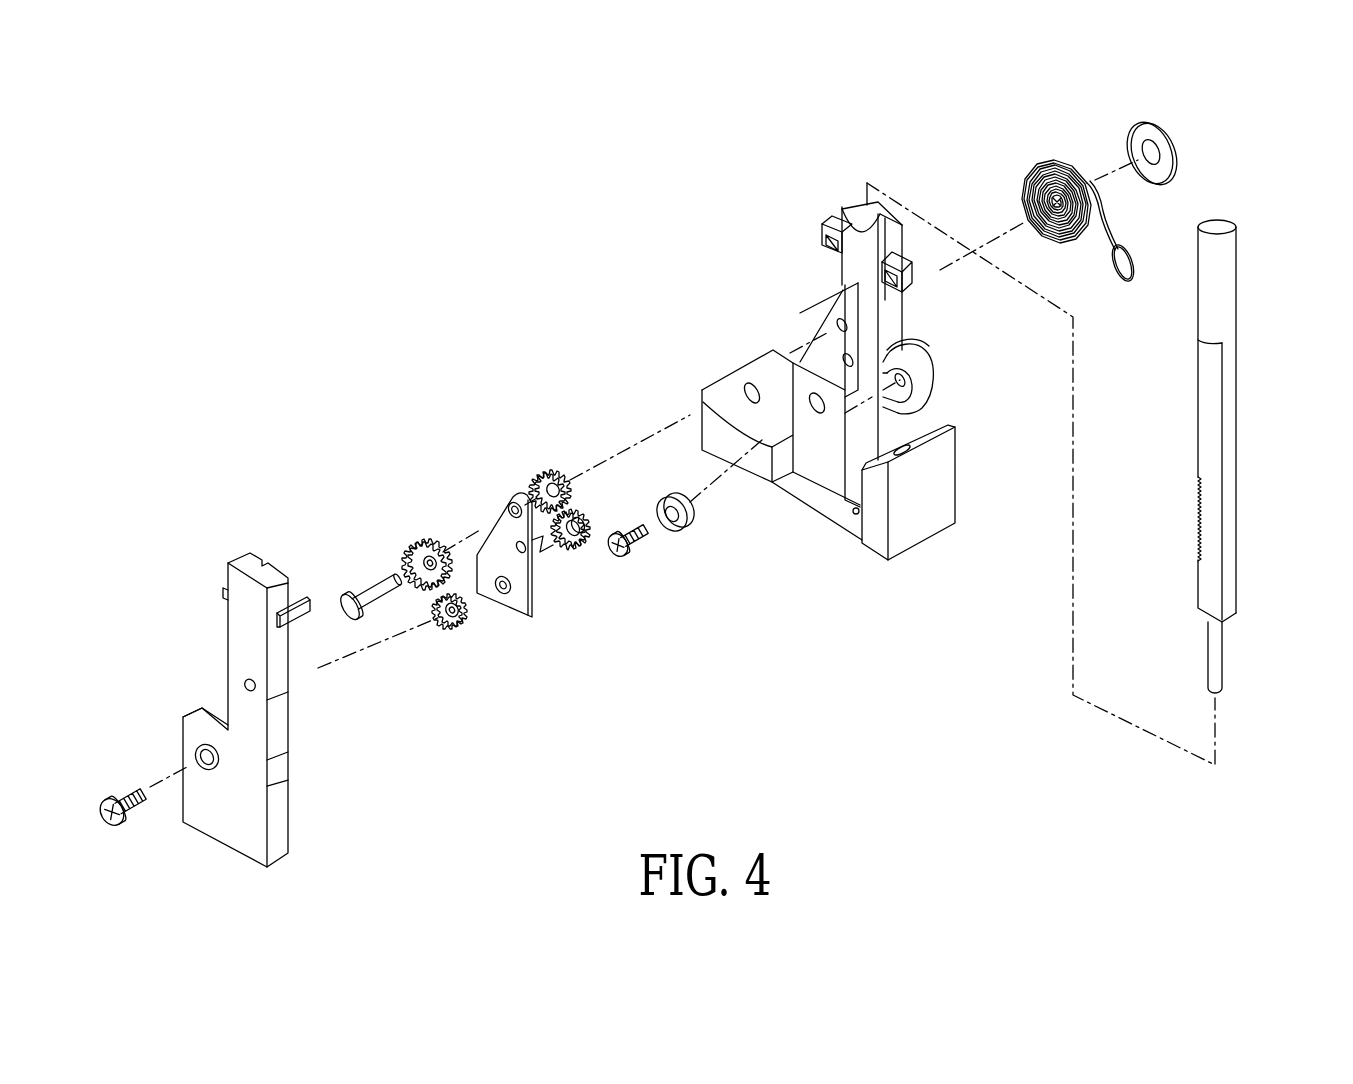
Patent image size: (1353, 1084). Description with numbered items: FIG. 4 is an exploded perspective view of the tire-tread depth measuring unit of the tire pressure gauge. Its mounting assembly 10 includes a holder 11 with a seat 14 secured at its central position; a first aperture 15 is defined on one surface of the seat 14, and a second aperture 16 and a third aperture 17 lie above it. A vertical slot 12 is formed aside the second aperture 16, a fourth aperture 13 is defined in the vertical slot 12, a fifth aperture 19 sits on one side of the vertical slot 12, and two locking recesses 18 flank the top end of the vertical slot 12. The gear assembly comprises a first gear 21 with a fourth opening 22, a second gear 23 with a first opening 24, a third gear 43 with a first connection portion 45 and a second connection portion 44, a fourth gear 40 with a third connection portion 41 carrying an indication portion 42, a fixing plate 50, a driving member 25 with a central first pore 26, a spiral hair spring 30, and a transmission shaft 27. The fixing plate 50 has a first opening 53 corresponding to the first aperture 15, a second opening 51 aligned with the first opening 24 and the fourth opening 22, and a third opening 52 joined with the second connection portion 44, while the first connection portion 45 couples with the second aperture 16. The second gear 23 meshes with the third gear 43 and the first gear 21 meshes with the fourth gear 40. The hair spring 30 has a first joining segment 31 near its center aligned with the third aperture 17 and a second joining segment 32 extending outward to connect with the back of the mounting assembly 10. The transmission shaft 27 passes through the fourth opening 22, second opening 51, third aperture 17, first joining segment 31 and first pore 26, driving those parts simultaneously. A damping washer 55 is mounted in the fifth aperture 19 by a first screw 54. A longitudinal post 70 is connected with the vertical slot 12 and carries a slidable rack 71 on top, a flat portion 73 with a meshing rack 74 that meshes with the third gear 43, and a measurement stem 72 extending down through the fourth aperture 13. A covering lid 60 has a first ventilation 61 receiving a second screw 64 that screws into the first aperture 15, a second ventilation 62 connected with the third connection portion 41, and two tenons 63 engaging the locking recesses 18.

The mounting assembly 10 is at (725, 248).
The holder 11 is at (922, 497).
The vertical slot 12 is at (858, 232).
The fourth aperture 13 is at (857, 514).
The seat 14 is at (833, 447).
The first aperture 15 is at (815, 398).
The second aperture 16 is at (850, 360).
The third aperture 17 is at (838, 324).
The locking recesses 18 is at (826, 238).
The fifth aperture 19 is at (903, 380).
The first gear 21 is at (430, 542).
The fourth opening 22 is at (415, 565).
The second gear 23 is at (553, 472).
The first opening 24 is at (545, 490).
The driving member 25 is at (1145, 130).
The first pore 26 is at (1153, 150).
The transmission shaft 27 is at (358, 612).
The hair spring 30 is at (1072, 235).
The first joining segment 31 is at (1057, 202).
The second joining segment 32 is at (1128, 245).
The fourth gear 40 is at (465, 628).
The third connection portion 41 is at (455, 625).
The indication portion 42 is at (445, 615).
The third gear 43 is at (578, 503).
The second connection portion 44 is at (567, 553).
The first connection portion 45 is at (588, 522).
The fixing plate 50 is at (490, 570).
The second opening 51 is at (512, 508).
The third opening 52 is at (525, 555).
The first opening 53 is at (515, 593).
The first screw 54 is at (632, 555).
The damping washer 55 is at (690, 525).
The covering lid 60 is at (248, 790).
The first ventilation 61 is at (203, 757).
The second ventilation 62 is at (248, 685).
The tenons 63 is at (300, 600).
The second screw 64 is at (130, 800).
The longitudinal post 70 is at (1240, 400).
The slidable rack 71 is at (1225, 252).
The measurement stem 72 is at (1222, 657).
The flat portion 73 is at (1210, 450).
The meshing rack 74 is at (1198, 527).